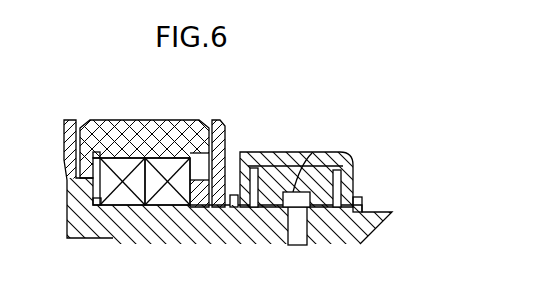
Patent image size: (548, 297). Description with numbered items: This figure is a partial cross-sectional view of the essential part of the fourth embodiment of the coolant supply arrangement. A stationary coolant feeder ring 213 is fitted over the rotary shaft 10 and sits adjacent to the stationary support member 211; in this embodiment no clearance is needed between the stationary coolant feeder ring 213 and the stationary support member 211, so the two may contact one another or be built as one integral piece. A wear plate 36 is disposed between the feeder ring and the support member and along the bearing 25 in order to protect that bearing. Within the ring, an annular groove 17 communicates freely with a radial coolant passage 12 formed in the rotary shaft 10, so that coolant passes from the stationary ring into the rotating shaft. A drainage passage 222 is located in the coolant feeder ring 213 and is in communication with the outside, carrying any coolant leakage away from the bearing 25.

The rotary shaft 10 is at (149, 222).
The radial coolant passage 12 is at (297, 228).
The annular groove 17 is at (317, 150).
The bearing 25 is at (127, 165).
The wear plate 36 is at (229, 176).
The stationary support member 211 is at (170, 137).
The stationary coolant feeder ring 213 is at (285, 150).
The drainage passage 222 is at (358, 163).